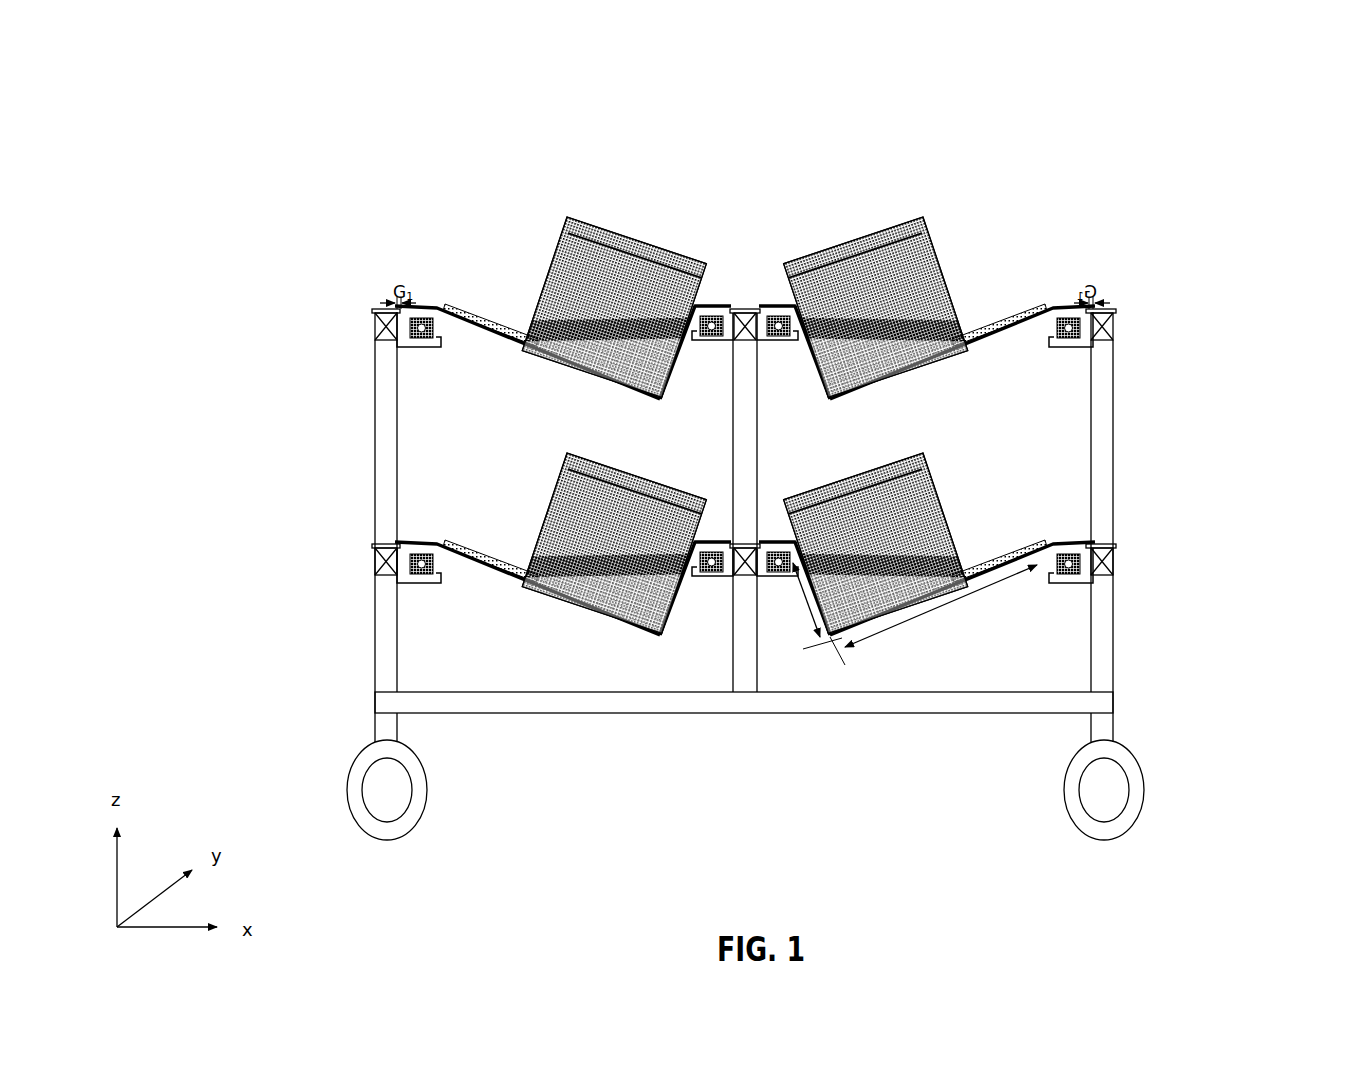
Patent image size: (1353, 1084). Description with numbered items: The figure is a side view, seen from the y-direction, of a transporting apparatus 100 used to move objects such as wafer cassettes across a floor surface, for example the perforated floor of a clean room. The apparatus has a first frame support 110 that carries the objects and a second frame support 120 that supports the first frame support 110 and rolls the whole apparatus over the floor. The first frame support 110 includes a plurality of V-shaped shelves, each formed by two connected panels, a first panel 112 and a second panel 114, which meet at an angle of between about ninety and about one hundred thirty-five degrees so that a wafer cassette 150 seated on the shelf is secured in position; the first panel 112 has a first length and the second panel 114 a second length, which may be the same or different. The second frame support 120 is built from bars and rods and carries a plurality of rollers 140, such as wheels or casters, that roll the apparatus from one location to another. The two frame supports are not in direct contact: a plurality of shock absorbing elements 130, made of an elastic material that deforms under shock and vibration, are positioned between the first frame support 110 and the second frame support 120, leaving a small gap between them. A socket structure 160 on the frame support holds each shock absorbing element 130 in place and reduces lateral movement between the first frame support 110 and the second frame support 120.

The transporting apparatus 100 is at (740, 95).
The first frame support 110 is at (830, 469).
The first panel 112 is at (603, 382).
The second panel 114 is at (680, 369).
The second frame support 120 is at (1105, 483).
The shock absorbing element 130 is at (1113, 311).
The roller 140 is at (1110, 790).
The wafer cassette 150 is at (918, 262).
The socket structure 160 is at (1114, 335).